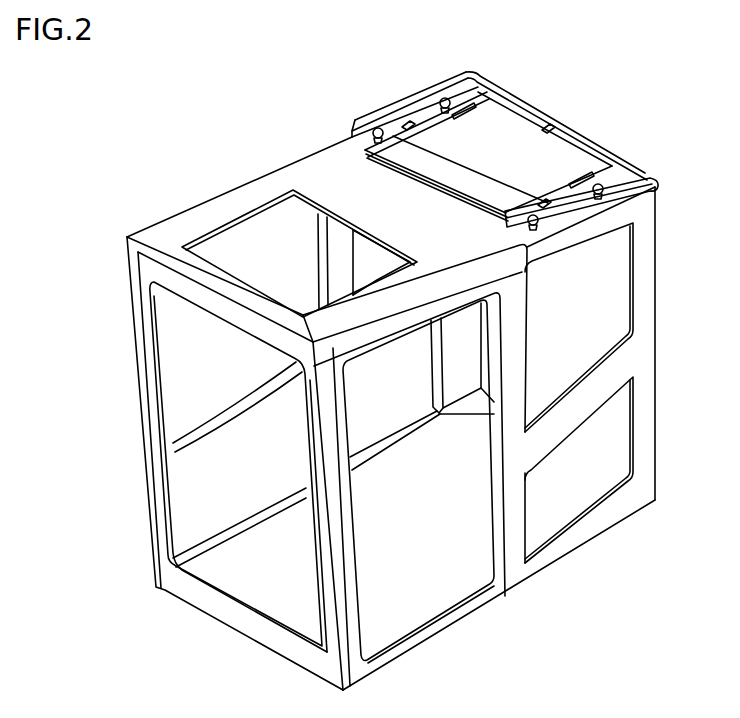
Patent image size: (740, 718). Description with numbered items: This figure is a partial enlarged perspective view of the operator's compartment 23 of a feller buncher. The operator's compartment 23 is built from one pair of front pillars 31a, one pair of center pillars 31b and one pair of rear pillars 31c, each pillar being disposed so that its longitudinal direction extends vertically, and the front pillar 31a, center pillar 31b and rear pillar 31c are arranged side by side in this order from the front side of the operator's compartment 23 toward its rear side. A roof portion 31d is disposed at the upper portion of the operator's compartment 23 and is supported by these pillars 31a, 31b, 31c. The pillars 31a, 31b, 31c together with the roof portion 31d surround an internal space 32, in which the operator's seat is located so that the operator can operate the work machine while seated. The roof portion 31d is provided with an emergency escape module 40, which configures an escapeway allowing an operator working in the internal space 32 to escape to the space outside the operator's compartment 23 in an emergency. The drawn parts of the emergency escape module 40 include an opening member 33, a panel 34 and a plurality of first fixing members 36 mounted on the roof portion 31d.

The operator's compartment 23 is at (143, 217).
The front pillar 31a is at (145, 427).
The center pillar 31b is at (337, 250).
The rear pillar 31c is at (460, 373).
The roof portion 31d is at (330, 180).
The internal space 32 is at (247, 577).
The opening member 33 is at (620, 177).
The panel 34 is at (488, 122).
The fixing member (first fixing member) 36 is at (378, 128).
The emergency escape module 40 is at (555, 110).